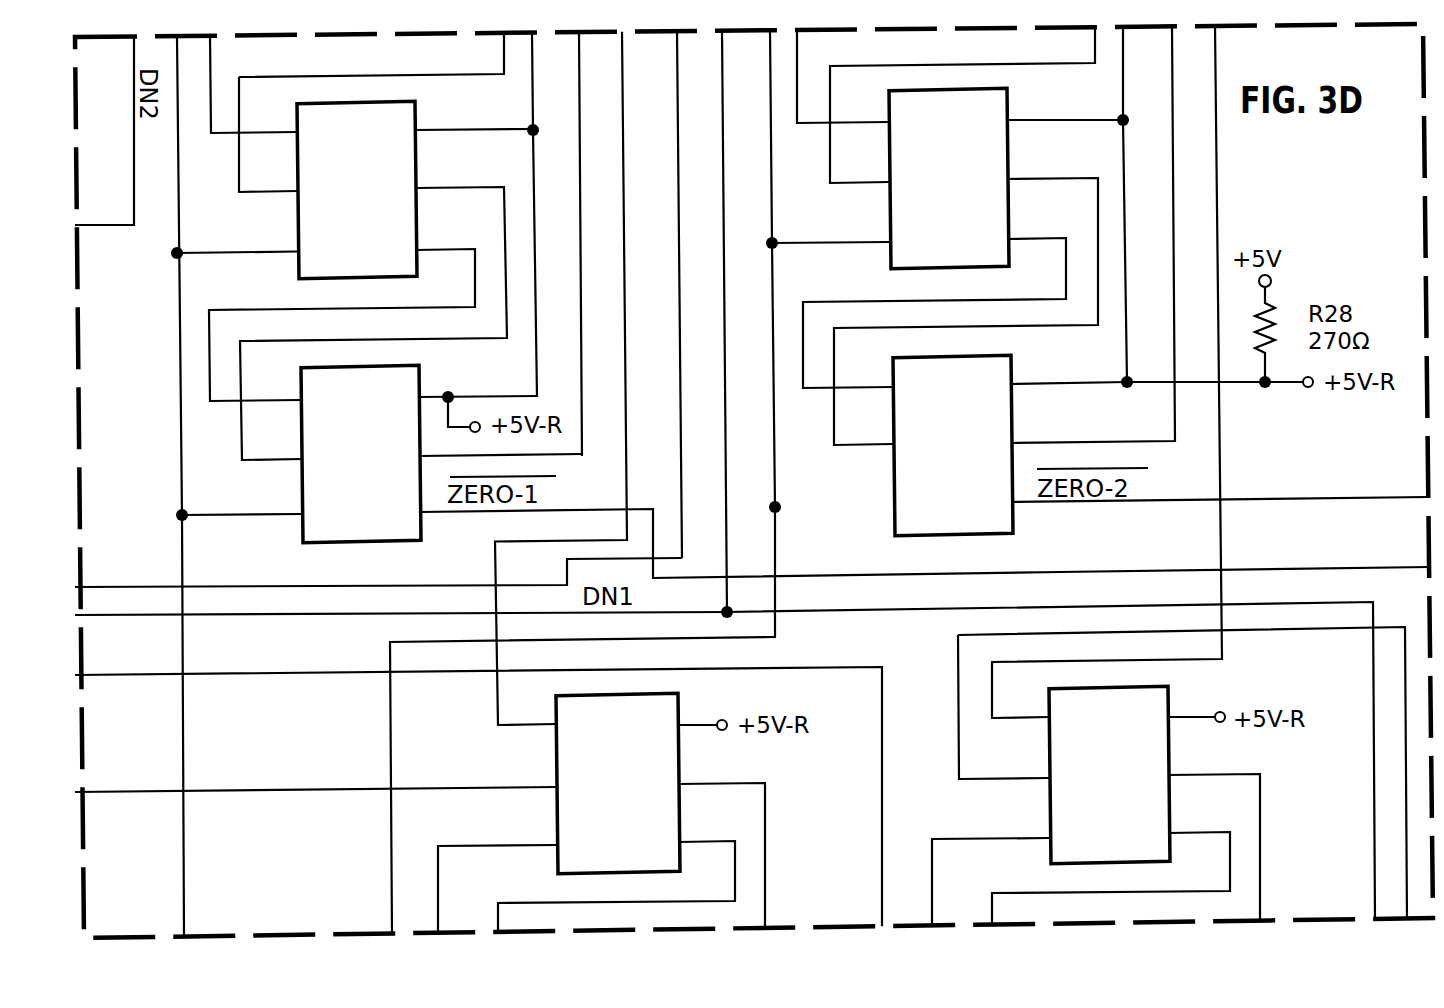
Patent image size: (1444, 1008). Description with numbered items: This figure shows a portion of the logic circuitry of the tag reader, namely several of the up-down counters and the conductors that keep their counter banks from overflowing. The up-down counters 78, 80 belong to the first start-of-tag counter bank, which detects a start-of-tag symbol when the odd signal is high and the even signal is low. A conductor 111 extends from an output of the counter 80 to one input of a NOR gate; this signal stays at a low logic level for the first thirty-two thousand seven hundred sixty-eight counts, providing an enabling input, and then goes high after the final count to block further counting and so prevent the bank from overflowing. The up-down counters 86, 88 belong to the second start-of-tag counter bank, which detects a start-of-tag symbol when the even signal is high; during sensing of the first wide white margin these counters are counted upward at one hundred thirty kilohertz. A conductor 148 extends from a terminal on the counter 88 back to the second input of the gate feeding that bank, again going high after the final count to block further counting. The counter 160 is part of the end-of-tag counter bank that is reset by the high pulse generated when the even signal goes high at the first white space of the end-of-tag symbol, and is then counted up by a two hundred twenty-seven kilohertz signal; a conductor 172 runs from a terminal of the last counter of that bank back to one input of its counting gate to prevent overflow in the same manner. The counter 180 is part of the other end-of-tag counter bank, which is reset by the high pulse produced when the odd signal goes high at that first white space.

The up-down counter 78 is at (417, 113).
The up-down counter 80 is at (421, 376).
The up-down counter 86 is at (1009, 102).
The up-down counter 88 is at (1013, 368).
The conductor 111 is at (579, 255).
The conductor 148 is at (1172, 230).
The counter 160 is at (556, 823).
The conductor 172 is at (882, 818).
The counter 180 is at (1049, 813).